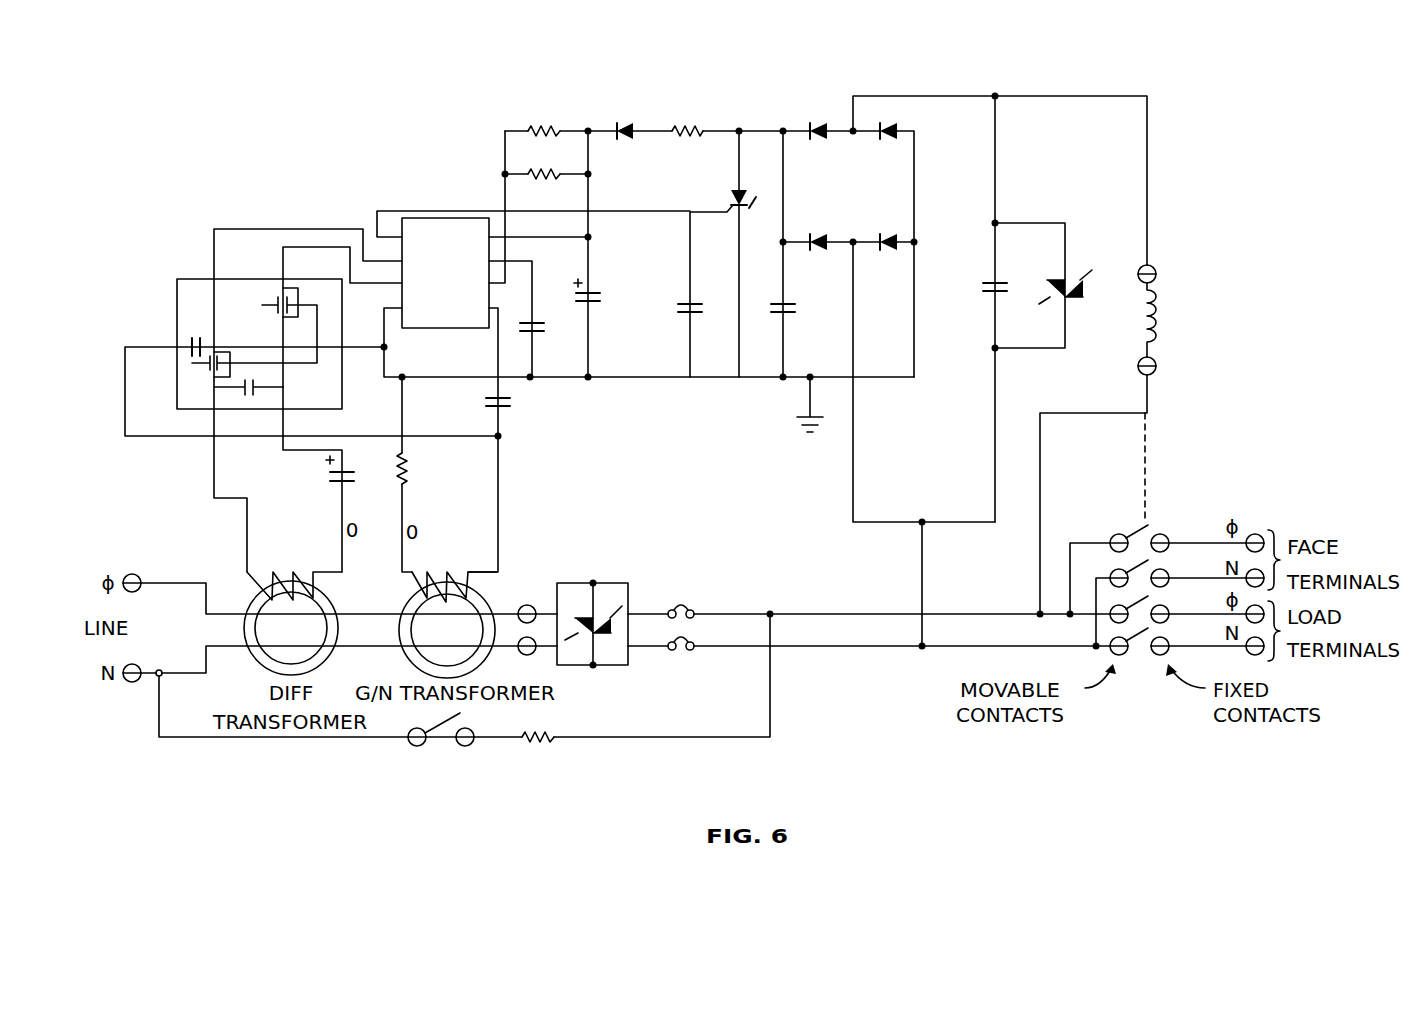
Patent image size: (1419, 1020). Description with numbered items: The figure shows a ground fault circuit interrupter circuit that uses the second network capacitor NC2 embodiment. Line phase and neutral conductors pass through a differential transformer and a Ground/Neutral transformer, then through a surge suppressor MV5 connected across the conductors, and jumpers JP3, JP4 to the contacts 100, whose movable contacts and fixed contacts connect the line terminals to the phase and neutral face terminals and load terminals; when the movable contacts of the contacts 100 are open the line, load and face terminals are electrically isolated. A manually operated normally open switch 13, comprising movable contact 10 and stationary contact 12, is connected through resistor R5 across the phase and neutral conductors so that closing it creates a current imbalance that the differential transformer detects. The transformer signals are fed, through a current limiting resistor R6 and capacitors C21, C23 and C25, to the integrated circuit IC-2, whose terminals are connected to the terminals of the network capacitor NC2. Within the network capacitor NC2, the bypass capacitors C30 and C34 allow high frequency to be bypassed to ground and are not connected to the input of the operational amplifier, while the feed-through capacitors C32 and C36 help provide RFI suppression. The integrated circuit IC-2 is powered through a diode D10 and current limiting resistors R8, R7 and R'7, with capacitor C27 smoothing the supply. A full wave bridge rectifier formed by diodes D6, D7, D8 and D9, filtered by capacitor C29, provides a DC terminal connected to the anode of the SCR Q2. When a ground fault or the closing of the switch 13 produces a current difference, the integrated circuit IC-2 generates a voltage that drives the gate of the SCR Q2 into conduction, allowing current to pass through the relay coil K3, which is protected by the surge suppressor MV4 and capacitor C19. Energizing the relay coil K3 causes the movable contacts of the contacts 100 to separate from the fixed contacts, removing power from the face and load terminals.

The network capacitor NC2 is at (195, 279).
The bypass capacitor C34 is at (192, 338).
The feed-through capacitor C36 is at (280, 313).
The feed-through capacitor C32 is at (213, 375).
The bypass capacitor C30 is at (253, 374).
The integrated circuit IC-2 is at (445, 273).
The current limiting resistor R'7 is at (545, 118).
The current limiting resistor R7 is at (544, 161).
The diode D10 is at (627, 118).
The current limiting resistor R8 is at (687, 118).
The SCR Q2 is at (728, 193).
The diode of full wave bridge rectifier D6 is at (821, 146).
The diode of full wave bridge rectifier D7 is at (890, 146).
The diode of full wave bridge rectifier D8 is at (821, 258).
The diode of full wave bridge rectifier D9 is at (890, 258).
The capacitor C27 is at (608, 296).
The capacitor C25 is at (551, 328).
The capacitor C29 is at (804, 308).
The capacitor C19 is at (973, 287).
The surge suppressor MV4 is at (1078, 271).
The relay coil K3 is at (1165, 320).
The capacitor C23 is at (519, 403).
The capacitor C21 is at (321, 473).
The current limiting resistor R6 is at (418, 468).
The surge suppressor MV5 is at (592, 609).
The jumper JP3 is at (680, 599).
The jumper JP4 is at (680, 663).
The current limiting resistor R5 is at (538, 725).
The movable contact 10 is at (413, 748).
The stationary contact 12 is at (467, 748).
The manually operated normally open switch 13 is at (440, 760).
The contacts 100 is at (1165, 511).